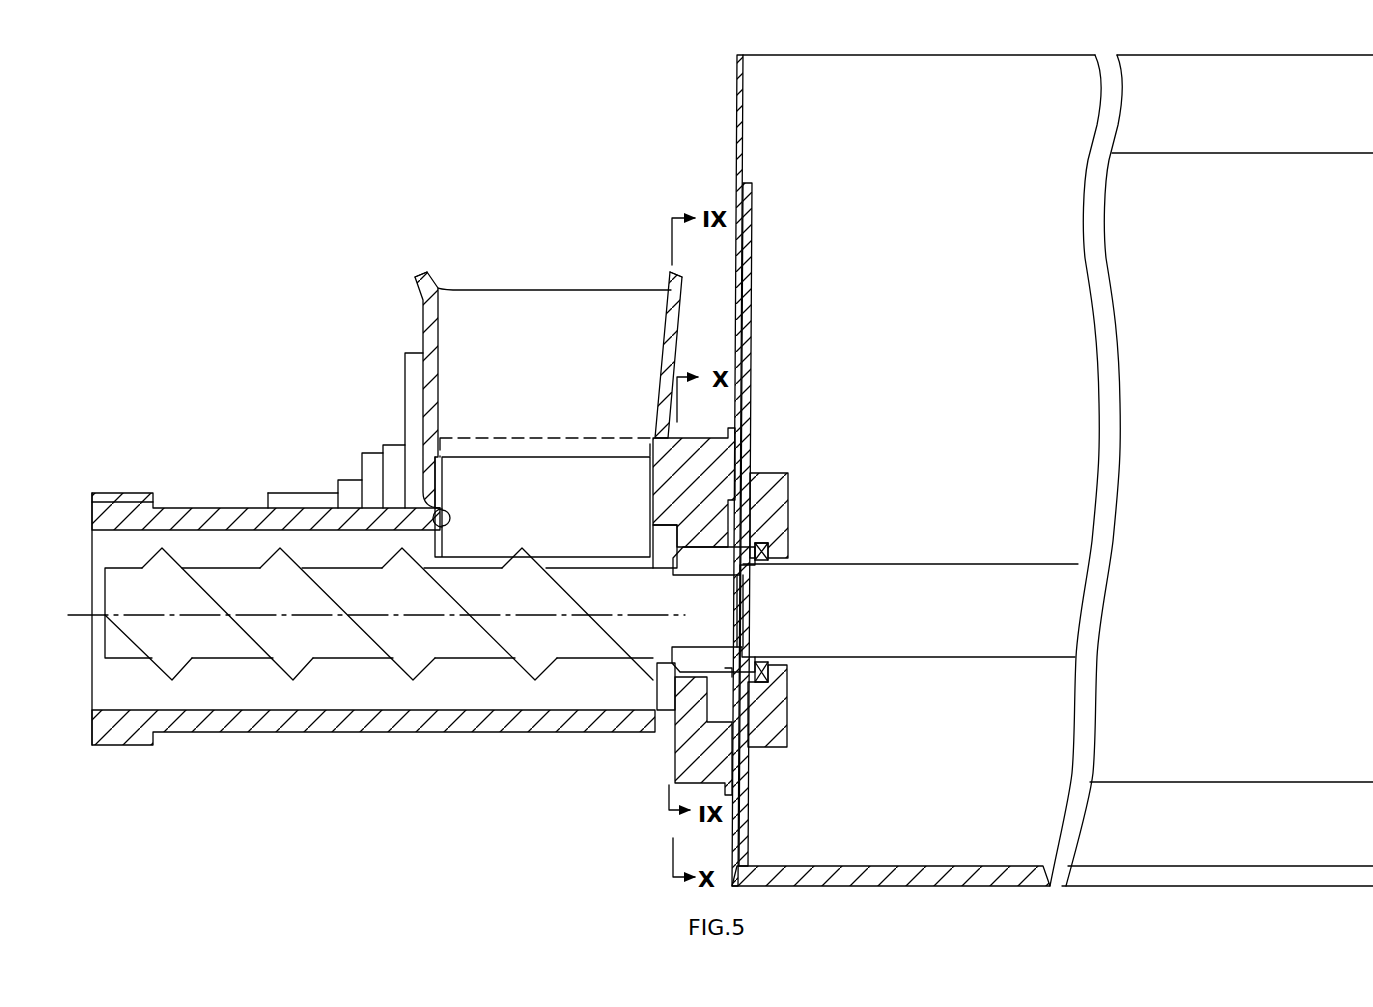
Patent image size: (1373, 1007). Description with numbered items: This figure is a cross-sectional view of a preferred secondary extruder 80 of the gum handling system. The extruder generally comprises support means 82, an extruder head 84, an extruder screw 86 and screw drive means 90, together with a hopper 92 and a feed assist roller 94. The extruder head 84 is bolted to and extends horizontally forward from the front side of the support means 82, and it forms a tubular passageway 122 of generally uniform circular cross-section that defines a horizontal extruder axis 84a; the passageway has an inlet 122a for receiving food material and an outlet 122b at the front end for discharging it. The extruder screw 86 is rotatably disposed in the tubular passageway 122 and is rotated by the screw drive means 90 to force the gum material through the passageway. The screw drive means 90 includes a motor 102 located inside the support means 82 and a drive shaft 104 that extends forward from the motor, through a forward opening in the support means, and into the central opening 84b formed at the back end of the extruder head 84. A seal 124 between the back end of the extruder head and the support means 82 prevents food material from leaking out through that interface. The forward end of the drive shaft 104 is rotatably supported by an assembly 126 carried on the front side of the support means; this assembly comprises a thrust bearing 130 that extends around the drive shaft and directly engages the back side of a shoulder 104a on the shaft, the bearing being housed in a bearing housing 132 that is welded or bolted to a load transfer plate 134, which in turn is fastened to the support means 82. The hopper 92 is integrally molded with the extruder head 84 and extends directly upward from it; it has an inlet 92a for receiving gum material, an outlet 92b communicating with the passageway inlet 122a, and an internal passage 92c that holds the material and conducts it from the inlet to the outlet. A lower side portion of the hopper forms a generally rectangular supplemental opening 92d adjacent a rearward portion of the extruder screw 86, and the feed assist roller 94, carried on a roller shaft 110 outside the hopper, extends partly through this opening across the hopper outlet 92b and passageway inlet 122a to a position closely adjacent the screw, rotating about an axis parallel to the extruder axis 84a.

The secondary extruder 80 is at (297, 170).
The support means 82 is at (736, 133).
The extruder head 84 is at (195, 508).
The extruder axis 84a is at (272, 614).
The central opening 84b is at (695, 548).
The extruder screw 86 is at (555, 633).
The screw drive means 90 is at (1017, 500).
The hopper 92 is at (420, 298).
The hopper inlet 92a is at (437, 283).
The hopper outlet 92b is at (443, 482).
The internal passage 92c is at (560, 385).
The supplemental opening 92d is at (605, 458).
The feed assist roller 94 is at (462, 552).
The motor 102 is at (1272, 381).
The drive shaft 104 is at (990, 625).
The shoulder 104a is at (757, 563).
The roller shaft 110 is at (290, 493).
The tubular passageway 122 is at (252, 708).
The passageway inlet 122a is at (437, 535).
The passageway outlet 122b is at (152, 529).
The seal 124 is at (712, 780).
The bearing assembly 126 is at (792, 462).
The thrust bearing 130 is at (787, 550).
The bearing housing 132 is at (775, 714).
The load transfer plate 134 is at (752, 300).